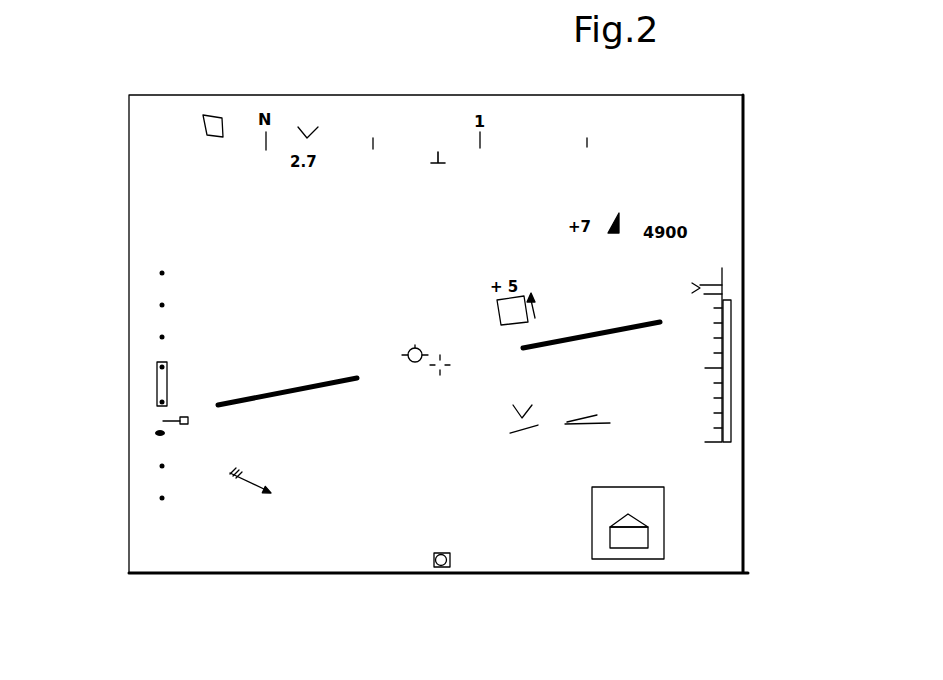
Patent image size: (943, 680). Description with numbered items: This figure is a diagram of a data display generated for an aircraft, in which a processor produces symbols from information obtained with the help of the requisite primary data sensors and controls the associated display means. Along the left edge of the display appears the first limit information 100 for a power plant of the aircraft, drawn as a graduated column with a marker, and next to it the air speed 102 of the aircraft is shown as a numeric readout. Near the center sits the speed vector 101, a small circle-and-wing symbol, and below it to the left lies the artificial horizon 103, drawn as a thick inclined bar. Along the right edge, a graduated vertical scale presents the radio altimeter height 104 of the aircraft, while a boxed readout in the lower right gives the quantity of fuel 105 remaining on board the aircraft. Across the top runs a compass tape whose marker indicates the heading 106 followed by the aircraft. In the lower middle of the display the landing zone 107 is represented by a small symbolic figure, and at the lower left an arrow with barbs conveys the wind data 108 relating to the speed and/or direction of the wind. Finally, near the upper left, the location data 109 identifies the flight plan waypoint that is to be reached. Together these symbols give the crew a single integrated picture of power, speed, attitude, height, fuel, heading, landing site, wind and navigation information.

The first limit information 100 is at (158, 383).
The speed vector 101 is at (407, 349).
The air speed 102 is at (200, 240).
The artificial horizon 103 is at (262, 392).
The radio altimeter height 104 is at (728, 280).
The quantity of fuel 105 is at (633, 538).
The heading 106 is at (441, 137).
The landing zone 107 is at (547, 425).
The wind data 108 is at (248, 480).
The location data 109 is at (155, 183).